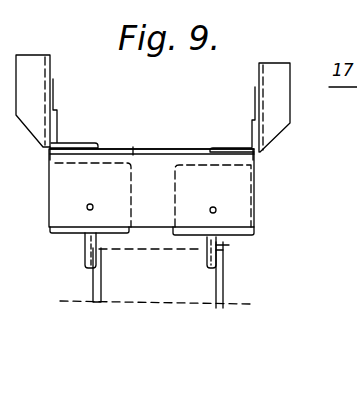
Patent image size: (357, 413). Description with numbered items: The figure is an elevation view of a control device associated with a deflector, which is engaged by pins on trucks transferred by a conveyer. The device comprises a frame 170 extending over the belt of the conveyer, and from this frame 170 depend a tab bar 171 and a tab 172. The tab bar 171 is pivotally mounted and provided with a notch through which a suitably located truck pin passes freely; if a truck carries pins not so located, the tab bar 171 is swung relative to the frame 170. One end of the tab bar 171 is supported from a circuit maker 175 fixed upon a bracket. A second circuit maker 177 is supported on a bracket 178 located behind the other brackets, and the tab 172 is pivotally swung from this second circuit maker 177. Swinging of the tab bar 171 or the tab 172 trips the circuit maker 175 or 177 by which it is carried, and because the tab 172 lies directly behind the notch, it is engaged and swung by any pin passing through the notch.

The frame 170 is at (181, 127).
The tab bar 171 is at (230, 246).
The tab 172 is at (88, 248).
The circuit maker 175 is at (238, 193).
The second circuit maker 177 is at (72, 192).
The bracket 178 is at (64, 156).